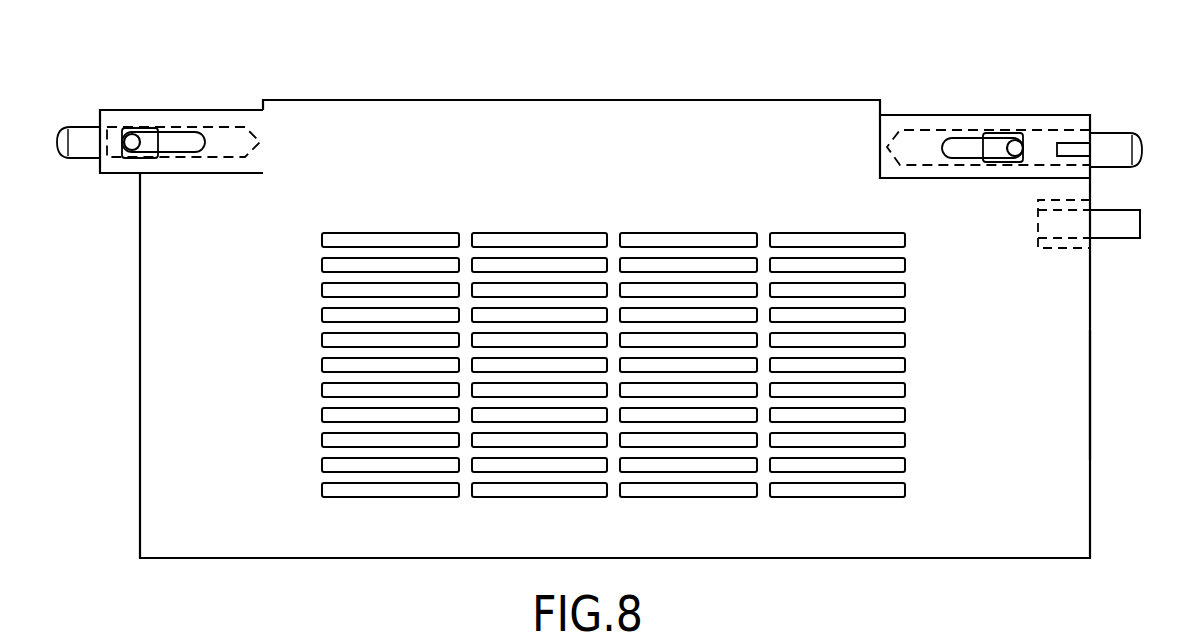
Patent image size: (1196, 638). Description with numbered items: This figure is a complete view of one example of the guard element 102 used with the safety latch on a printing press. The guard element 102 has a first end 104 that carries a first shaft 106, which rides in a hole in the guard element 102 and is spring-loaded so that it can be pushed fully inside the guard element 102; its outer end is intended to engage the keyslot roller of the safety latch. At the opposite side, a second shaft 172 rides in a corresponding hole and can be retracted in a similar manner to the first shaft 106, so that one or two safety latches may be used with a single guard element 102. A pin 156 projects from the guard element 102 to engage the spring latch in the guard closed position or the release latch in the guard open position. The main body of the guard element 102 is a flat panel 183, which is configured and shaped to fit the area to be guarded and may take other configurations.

The guard element 102 is at (458, 99).
The first end 104 is at (1054, 113).
The first shaft 106 is at (1122, 130).
The pin 156 is at (1142, 222).
The second shaft 172 is at (86, 125).
The flat panel 183 is at (1092, 427).